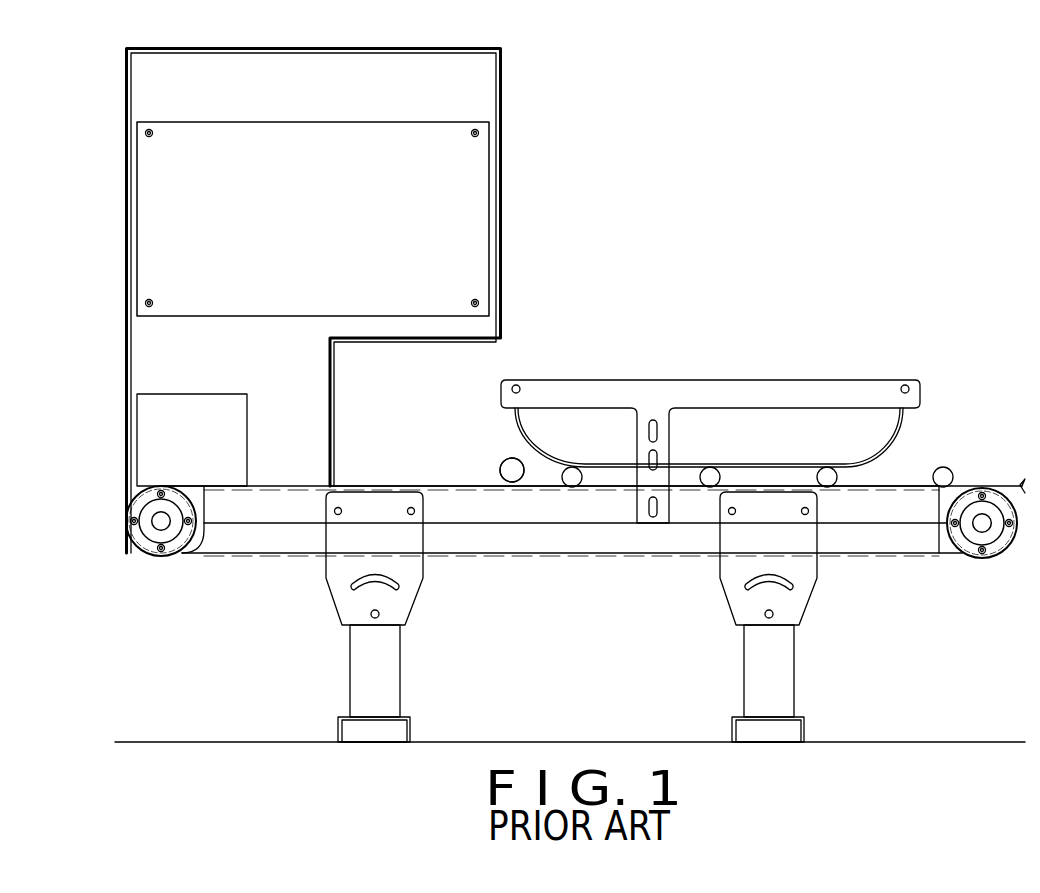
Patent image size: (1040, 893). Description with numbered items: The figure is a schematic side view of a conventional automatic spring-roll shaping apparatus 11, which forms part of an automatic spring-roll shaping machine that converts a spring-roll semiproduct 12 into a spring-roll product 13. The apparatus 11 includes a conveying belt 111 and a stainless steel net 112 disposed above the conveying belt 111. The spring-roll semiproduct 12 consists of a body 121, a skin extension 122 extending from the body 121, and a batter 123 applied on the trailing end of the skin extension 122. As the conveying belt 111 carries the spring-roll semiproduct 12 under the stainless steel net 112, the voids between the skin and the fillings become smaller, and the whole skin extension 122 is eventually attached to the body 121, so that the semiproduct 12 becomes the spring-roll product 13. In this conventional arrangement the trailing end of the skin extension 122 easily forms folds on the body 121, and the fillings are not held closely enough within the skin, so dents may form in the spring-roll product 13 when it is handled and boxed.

The automatic spring-roll shaping apparatus 11 is at (710, 391).
The conveying belt 111 is at (222, 555).
The stainless steel net 112 is at (750, 467).
The spring-roll semiproduct 12 is at (512, 456).
The body 121 is at (507, 472).
The skin extension 122 is at (493, 485).
The batter 123 is at (480, 486).
The spring-roll product 13 is at (570, 478).